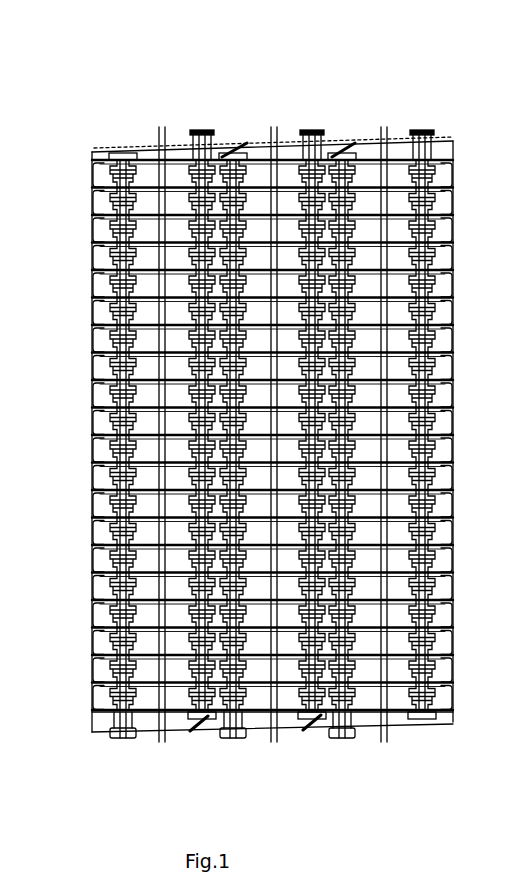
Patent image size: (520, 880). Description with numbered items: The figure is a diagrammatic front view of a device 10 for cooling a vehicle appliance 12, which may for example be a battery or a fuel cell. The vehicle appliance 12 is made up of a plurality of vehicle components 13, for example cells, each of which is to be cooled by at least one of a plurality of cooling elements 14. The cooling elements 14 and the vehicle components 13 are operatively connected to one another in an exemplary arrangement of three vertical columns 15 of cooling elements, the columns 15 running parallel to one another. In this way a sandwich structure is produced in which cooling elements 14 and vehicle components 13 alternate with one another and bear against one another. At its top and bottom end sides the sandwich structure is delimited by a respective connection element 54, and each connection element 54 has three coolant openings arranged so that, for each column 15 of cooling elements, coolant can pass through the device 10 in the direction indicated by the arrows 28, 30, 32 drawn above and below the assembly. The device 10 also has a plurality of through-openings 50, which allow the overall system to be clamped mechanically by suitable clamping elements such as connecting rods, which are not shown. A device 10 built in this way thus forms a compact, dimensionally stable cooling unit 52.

The device 10 is at (429, 90).
The vehicle appliance 12 is at (440, 231).
The vehicle components 13 is at (95, 501).
The cooling elements 14 is at (438, 418).
The vertical columns 15 is at (168, 777).
The arrow 28 is at (205, 112).
The arrow 30 is at (309, 112).
The arrow 32 is at (421, 112).
The through-openings 50 is at (156, 141).
The cooling unit 52 is at (148, 121).
The connection element 54 is at (442, 144).